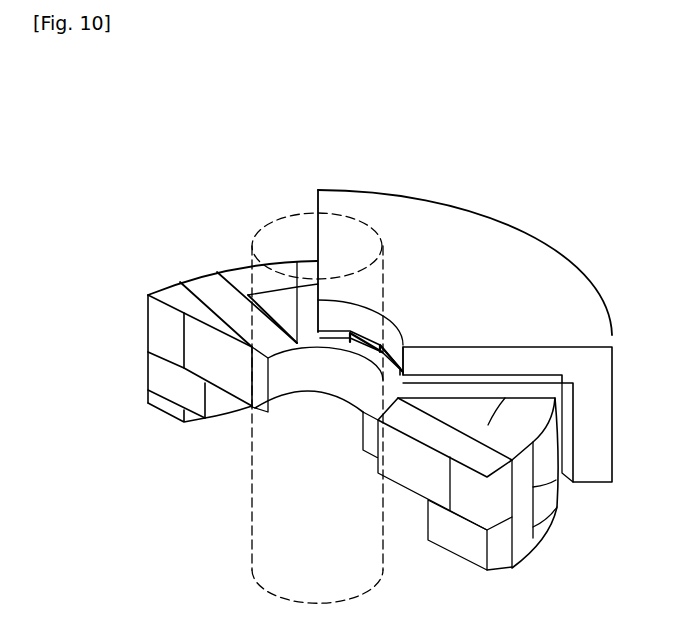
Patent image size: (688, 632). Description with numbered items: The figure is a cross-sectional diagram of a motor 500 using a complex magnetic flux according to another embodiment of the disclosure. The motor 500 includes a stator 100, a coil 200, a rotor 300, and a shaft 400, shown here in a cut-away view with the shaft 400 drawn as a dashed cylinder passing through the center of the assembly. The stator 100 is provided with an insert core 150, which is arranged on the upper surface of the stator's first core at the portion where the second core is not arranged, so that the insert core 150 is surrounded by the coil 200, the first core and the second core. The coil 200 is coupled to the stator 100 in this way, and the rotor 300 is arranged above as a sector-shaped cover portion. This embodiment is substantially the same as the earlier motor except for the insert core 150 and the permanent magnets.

The stator 100 is at (417, 507).
The insert core 150 is at (148, 326).
The coil 200 is at (200, 277).
The rotor 300 is at (543, 242).
The shaft 400 is at (253, 478).
The motor using a complex magnetic flux 500 is at (434, 140).